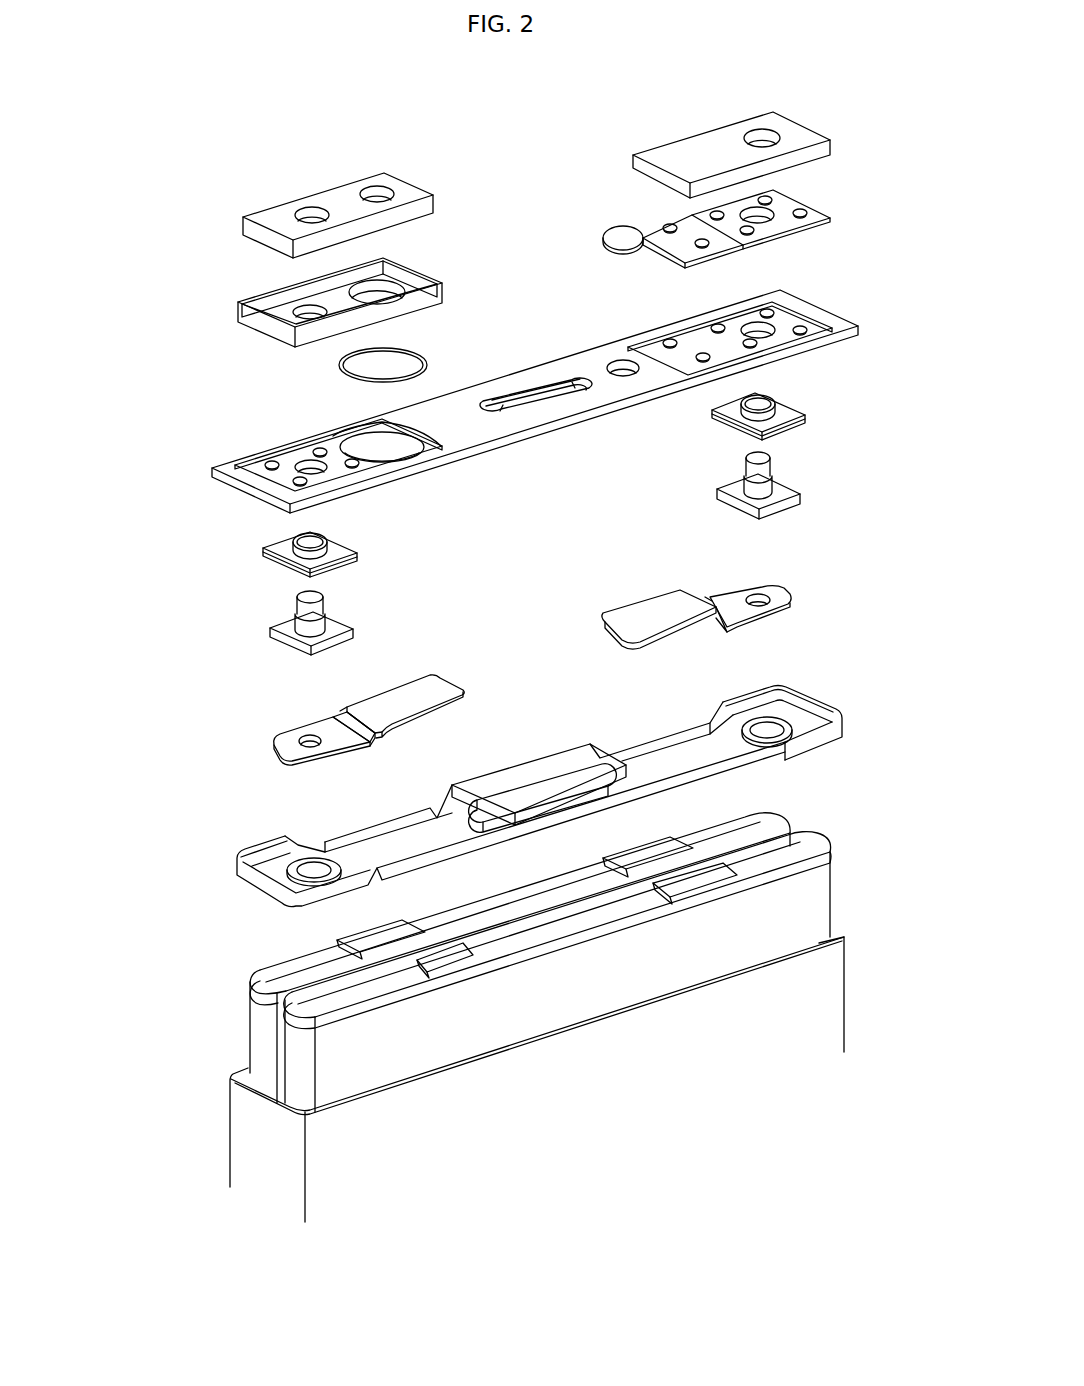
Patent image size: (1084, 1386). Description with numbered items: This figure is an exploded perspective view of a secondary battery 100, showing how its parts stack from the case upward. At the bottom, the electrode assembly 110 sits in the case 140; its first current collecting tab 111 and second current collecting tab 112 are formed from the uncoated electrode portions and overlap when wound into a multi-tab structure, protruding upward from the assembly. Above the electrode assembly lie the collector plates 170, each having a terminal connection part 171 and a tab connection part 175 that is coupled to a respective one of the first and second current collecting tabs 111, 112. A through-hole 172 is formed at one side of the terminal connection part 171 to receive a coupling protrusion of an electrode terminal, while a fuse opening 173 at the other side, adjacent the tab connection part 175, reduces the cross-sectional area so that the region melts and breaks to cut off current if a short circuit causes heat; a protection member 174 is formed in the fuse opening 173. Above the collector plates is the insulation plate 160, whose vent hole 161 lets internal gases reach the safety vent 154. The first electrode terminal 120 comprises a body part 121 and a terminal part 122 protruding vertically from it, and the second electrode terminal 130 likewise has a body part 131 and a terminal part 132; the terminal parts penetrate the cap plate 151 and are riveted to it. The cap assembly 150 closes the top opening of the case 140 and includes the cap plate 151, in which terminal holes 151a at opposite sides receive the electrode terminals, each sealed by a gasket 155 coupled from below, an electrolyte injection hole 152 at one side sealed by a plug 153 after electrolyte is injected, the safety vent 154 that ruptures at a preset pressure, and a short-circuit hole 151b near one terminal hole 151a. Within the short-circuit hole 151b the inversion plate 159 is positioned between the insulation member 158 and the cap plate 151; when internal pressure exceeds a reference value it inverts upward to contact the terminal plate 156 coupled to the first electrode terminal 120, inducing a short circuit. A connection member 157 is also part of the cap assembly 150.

The secondary battery 100 is at (110, 108).
The electrode assembly 110 is at (846, 899).
The first current collecting tab 111 is at (742, 878).
The second current collecting tab 112 is at (388, 946).
The first electrode terminal 120 is at (207, 571).
The body part 121 is at (270, 626).
The terminal part 122 is at (297, 599).
The second electrode terminal 130 is at (866, 440).
The body part 131 is at (800, 491).
The terminal part 132 is at (772, 461).
The case 140 is at (848, 1016).
The cap assembly 150 is at (156, 210).
The cap plate 151 is at (232, 464).
The terminal hole 151a is at (305, 458).
The short-circuit hole 151b is at (375, 437).
The electrolyte injection hole 152 is at (622, 366).
The plug 153 is at (603, 238).
The safety vent 154 is at (534, 393).
The gasket 155 is at (275, 541).
The terminal plate 156 is at (242, 219).
The connection member 157 is at (797, 208).
The insulation member 158 is at (242, 304).
The inversion plate 159 is at (340, 366).
The insulation plate 160 is at (833, 688).
The vent hole 161 is at (572, 772).
The collector plate 170 is at (258, 743).
The terminal connection part 171 is at (292, 734).
The through-hole 172 is at (308, 746).
The fuse opening 173 is at (343, 737).
The protection member 174 is at (339, 712).
The tab connection part 175 is at (445, 683).